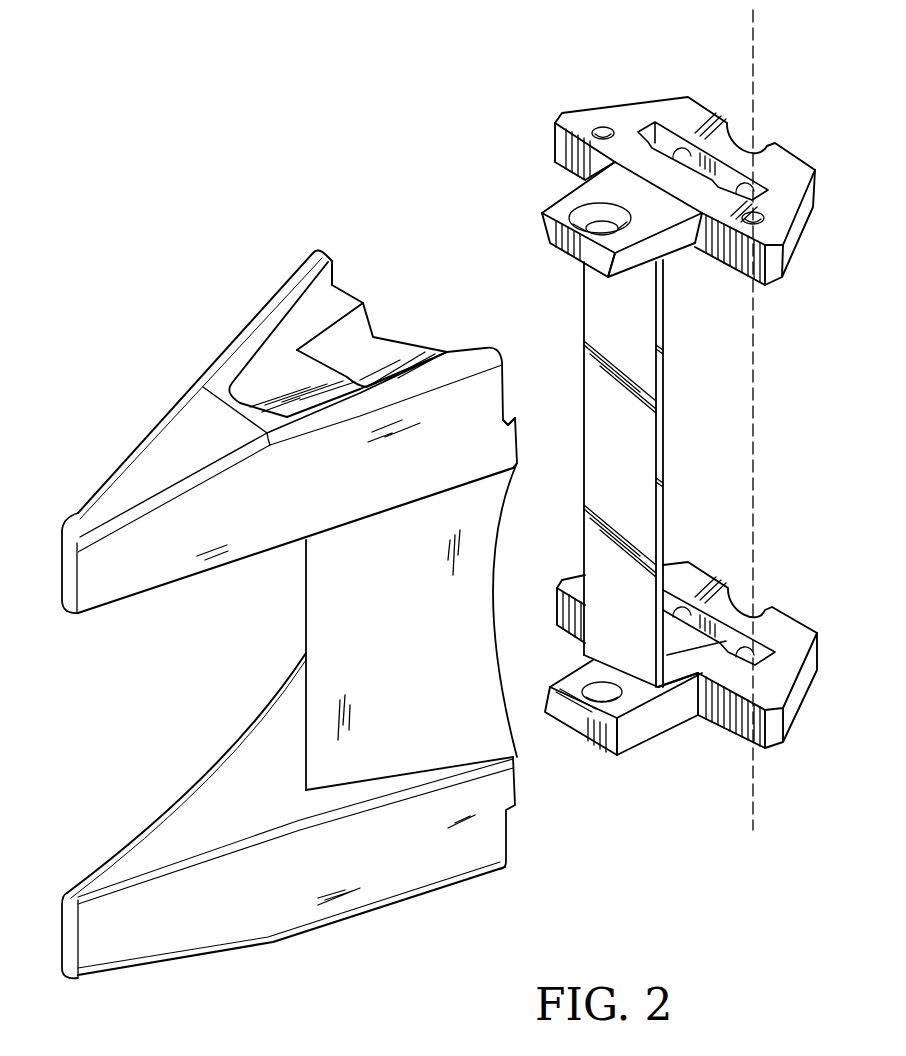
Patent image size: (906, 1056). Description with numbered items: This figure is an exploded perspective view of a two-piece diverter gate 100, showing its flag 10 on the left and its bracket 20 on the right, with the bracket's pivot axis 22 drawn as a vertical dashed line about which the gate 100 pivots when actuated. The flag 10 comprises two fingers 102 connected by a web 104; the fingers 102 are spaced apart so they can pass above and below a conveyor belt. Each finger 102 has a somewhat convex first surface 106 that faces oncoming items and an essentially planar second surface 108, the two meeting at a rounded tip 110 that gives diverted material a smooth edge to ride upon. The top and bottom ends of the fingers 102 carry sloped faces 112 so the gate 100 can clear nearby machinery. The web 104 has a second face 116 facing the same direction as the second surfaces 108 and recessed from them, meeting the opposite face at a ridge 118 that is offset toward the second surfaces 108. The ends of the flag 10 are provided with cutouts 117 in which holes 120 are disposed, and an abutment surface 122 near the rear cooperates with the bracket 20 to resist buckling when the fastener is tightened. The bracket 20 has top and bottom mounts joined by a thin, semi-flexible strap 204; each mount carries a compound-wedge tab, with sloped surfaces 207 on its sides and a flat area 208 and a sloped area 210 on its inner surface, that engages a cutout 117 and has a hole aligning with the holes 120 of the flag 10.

The diverter gate 100 is at (227, 80).
The flag 10 is at (148, 257).
The bracket 20 is at (592, 53).
The pivot axis 22 is at (762, 50).
The fingers 102 is at (137, 540).
The web 104 is at (330, 625).
The first surfaces 106 is at (232, 352).
The second surfaces 108 is at (387, 488).
The tips 110 is at (68, 585).
The sloped faces 112 is at (187, 430).
The second face 116 is at (460, 615).
The cutouts 117 is at (383, 357).
The ridge 118 is at (340, 302).
The holes 120 is at (353, 373).
The abutment surfaces 122 is at (507, 413).
The strap 204 is at (637, 443).
The sloped surfaces 207 is at (683, 233).
The flat area 208 is at (663, 262).
The sloped area 210 is at (630, 290).